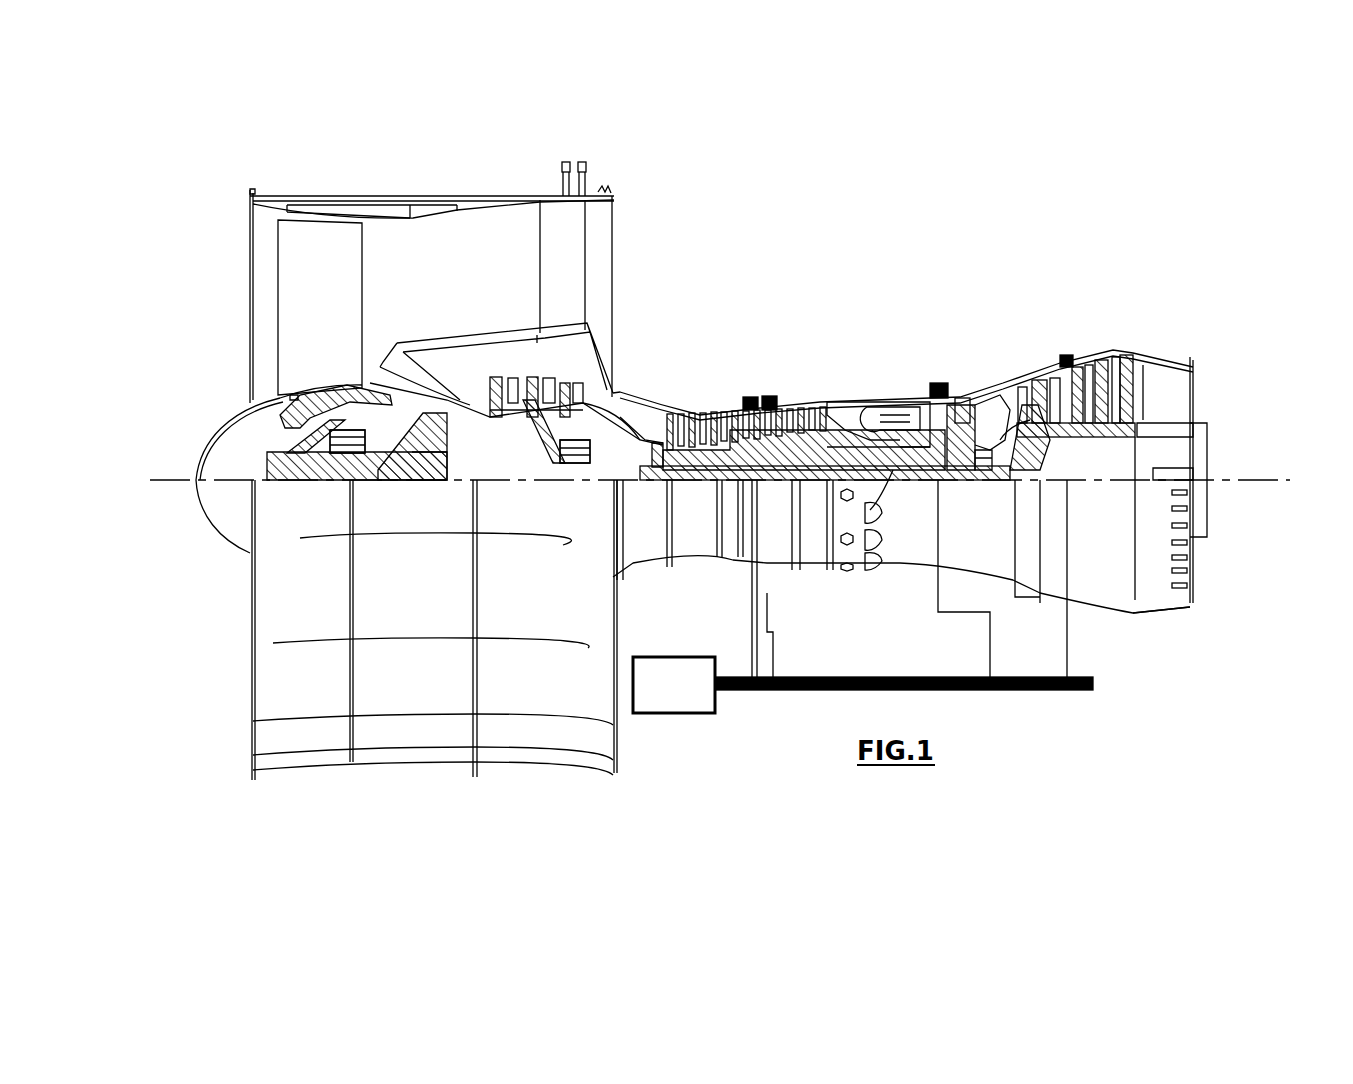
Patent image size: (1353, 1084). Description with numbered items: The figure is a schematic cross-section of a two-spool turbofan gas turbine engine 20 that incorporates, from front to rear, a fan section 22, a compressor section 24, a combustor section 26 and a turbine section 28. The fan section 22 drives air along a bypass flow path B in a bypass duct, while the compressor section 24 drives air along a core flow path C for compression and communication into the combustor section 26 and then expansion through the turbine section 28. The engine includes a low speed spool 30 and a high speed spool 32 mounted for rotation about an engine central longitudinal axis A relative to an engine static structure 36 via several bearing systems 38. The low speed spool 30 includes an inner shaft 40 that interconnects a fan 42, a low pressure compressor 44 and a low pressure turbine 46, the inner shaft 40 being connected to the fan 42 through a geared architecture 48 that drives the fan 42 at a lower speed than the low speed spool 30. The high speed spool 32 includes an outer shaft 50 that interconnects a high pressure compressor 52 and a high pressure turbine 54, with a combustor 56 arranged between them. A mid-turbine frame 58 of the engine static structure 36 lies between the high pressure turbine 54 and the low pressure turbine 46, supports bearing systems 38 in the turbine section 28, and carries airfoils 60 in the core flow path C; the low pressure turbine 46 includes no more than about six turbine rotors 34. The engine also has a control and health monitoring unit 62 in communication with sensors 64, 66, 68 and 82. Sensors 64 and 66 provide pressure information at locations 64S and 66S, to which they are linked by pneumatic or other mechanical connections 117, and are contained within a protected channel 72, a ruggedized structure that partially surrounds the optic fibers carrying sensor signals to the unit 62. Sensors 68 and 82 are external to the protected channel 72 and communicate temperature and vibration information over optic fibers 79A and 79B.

The gas turbine engine 20 is at (896, 222).
The fan section 22 is at (458, 167).
The compressor section 24 is at (875, 295).
The combustor section 26 is at (975, 295).
The turbine section 28 is at (1150, 295).
The low speed spool 30 is at (778, 488).
The high speed spool 32 is at (813, 437).
The turbine rotors 34 is at (1097, 443).
The engine static structure 36 is at (820, 572).
The bearing systems 38 is at (330, 483).
The inner shaft 40 is at (635, 485).
The fan 42 is at (337, 324).
The low pressure compressor 44 is at (547, 380).
The low pressure turbine 46 is at (1078, 367).
The geared architecture 48 is at (438, 480).
The outer shaft 50 is at (893, 472).
The high pressure compressor 52 is at (743, 398).
The high pressure turbine 54 is at (950, 398).
The combustor 56 is at (877, 417).
The mid-turbine frame 58 is at (999, 383).
The airfoils 60 is at (1010, 427).
The control and health monitoring unit 62 is at (690, 698).
The sensor 64 is at (777, 675).
The location 64S is at (768, 396).
The sensor 66 is at (990, 677).
The location 66S is at (940, 383).
The sensor 68 is at (751, 397).
The protected channel 72 is at (1027, 692).
The optic fiber 79A is at (740, 640).
The optic fiber 79B is at (1086, 652).
The sensor 82 is at (1067, 355).
The connections 117 is at (767, 632).
The engine central longitudinal axis A is at (1290, 472).
The bypass flow path B is at (482, 270).
The core flow path C is at (432, 376).